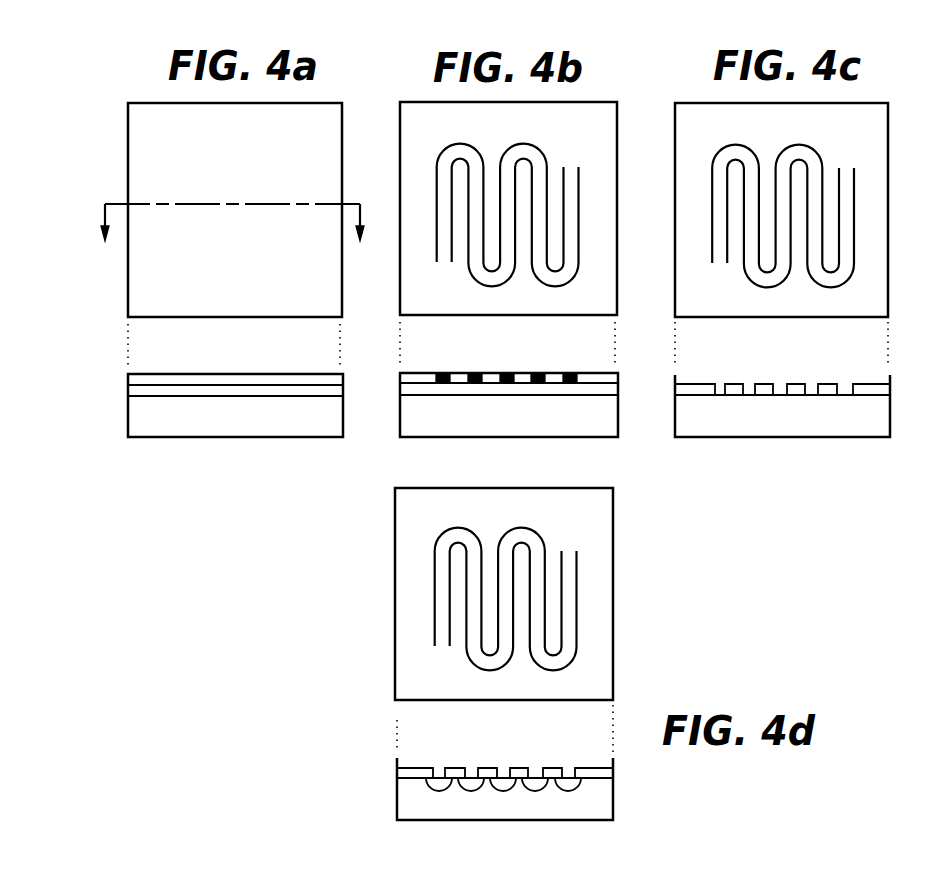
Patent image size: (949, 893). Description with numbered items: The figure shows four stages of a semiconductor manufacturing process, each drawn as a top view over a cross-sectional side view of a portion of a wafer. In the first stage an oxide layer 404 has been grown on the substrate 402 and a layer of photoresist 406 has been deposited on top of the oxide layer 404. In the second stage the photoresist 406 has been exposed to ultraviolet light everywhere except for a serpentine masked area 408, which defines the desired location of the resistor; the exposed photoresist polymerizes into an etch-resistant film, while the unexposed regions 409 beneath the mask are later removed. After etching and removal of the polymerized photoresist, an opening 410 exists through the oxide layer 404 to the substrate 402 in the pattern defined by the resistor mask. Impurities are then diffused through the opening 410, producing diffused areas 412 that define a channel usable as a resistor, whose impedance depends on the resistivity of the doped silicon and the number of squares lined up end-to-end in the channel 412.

In FIG. 4a, the substrate 402 is at (137, 103).
In FIG. 4a, the oxide layer 404 is at (128, 396).
In FIG. 4a, the photoresist 406 is at (128, 381).
In FIG. 4b, the masked area 408 is at (525, 146).
In FIG. 4b, the exposed photoresist regions 409 is at (570, 374).
In FIG. 4c, the opening 410 is at (845, 390).
In FIG. 4d, the diffused areas 412 is at (568, 791).